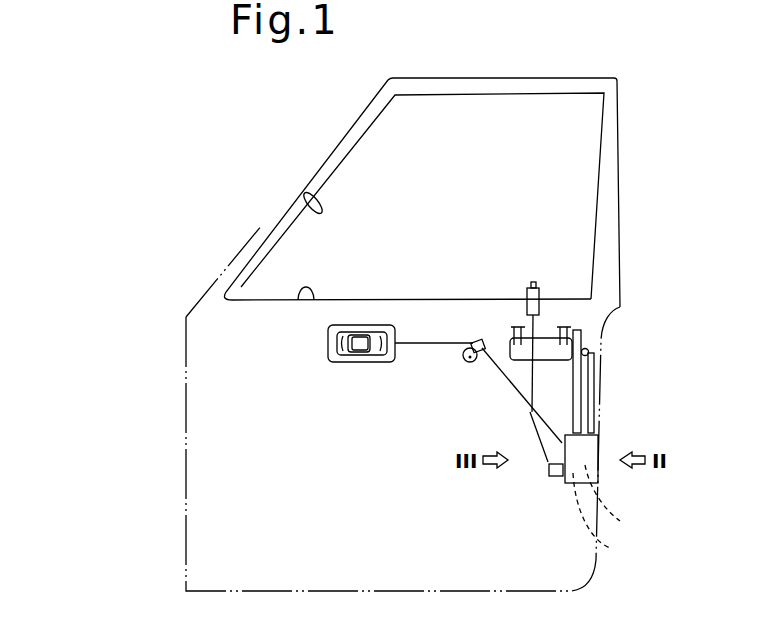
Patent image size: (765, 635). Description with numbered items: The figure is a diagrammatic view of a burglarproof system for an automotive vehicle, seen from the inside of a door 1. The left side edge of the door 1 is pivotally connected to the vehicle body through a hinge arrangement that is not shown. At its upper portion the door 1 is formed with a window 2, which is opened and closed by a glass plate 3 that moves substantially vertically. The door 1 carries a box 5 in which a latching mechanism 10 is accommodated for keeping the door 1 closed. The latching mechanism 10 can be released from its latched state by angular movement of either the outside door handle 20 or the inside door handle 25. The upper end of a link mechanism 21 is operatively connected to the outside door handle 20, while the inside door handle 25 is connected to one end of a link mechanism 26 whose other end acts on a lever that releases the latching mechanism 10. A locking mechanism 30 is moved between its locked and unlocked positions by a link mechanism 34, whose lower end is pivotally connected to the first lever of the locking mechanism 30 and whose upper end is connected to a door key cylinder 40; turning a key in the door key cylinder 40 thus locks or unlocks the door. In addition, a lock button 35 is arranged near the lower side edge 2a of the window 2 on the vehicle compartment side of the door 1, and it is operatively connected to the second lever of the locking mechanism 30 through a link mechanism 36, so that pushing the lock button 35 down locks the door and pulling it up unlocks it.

The door 1 is at (208, 274).
The window 2 is at (303, 194).
The lower side edge of the window 2a is at (301, 305).
The glass plate 3 is at (373, 185).
The box 5 is at (585, 448).
The latching mechanism 10 is at (617, 500).
The outside door handle 20 is at (545, 335).
The link mechanism 21 is at (588, 383).
The inside door handle 25 is at (362, 362).
The link mechanism 26 is at (447, 350).
The locking mechanism 30 is at (607, 518).
The link mechanism 34 is at (600, 412).
The lock button 35 is at (534, 282).
The link mechanism 36 is at (532, 446).
The door key cylinder 40 is at (589, 352).